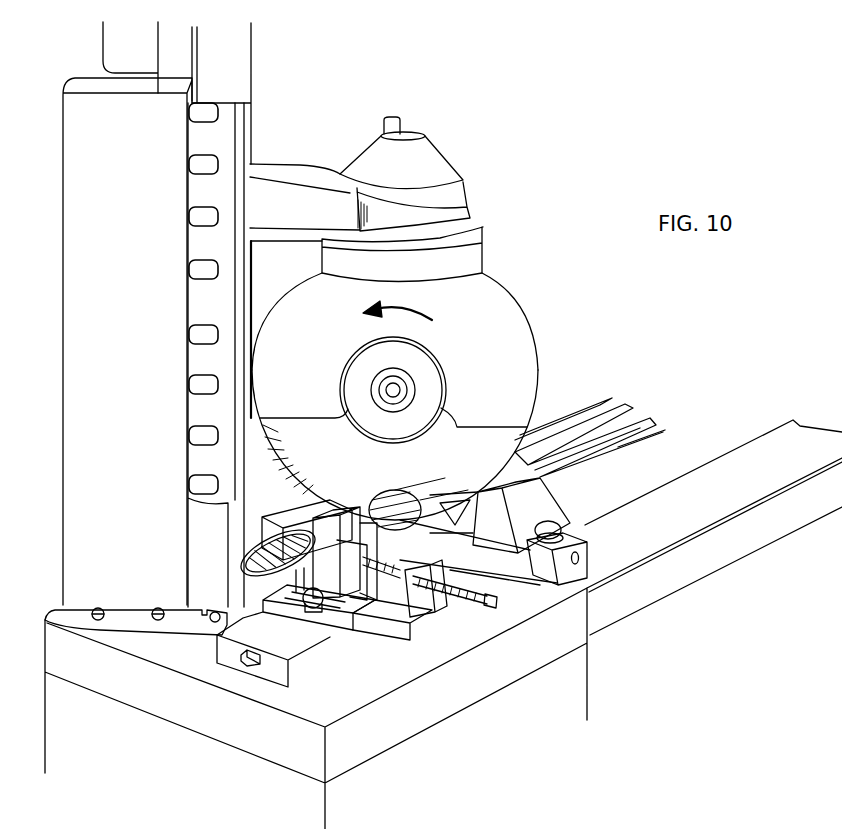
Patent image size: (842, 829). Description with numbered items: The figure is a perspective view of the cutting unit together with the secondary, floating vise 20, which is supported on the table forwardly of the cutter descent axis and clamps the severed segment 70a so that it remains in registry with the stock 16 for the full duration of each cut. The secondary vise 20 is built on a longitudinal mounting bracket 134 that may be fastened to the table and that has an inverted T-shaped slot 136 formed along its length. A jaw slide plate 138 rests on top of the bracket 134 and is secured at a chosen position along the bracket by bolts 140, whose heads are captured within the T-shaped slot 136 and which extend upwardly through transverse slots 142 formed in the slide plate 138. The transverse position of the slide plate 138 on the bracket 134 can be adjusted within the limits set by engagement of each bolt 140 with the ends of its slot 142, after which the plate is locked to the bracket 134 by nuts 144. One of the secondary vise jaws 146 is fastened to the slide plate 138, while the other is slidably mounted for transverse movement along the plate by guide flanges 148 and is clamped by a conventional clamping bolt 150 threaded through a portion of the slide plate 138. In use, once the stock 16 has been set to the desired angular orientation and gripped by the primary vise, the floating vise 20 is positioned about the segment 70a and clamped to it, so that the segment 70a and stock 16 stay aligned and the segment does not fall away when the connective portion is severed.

The stock 16 is at (583, 433).
The secondary floating vise 20 is at (353, 678).
The segment 70a is at (371, 500).
The longitudinal mounting bracket 134 is at (297, 673).
The inverted T-shaped slot 136 is at (252, 662).
The jaw slide plate 138 is at (390, 623).
The bolts 140 is at (296, 580).
The transverse slots 142 is at (343, 612).
The nuts 144 is at (300, 598).
The secondary vise jaws 146 is at (352, 513).
The guide flanges 148 is at (412, 626).
The clamping bolt 150 is at (461, 603).